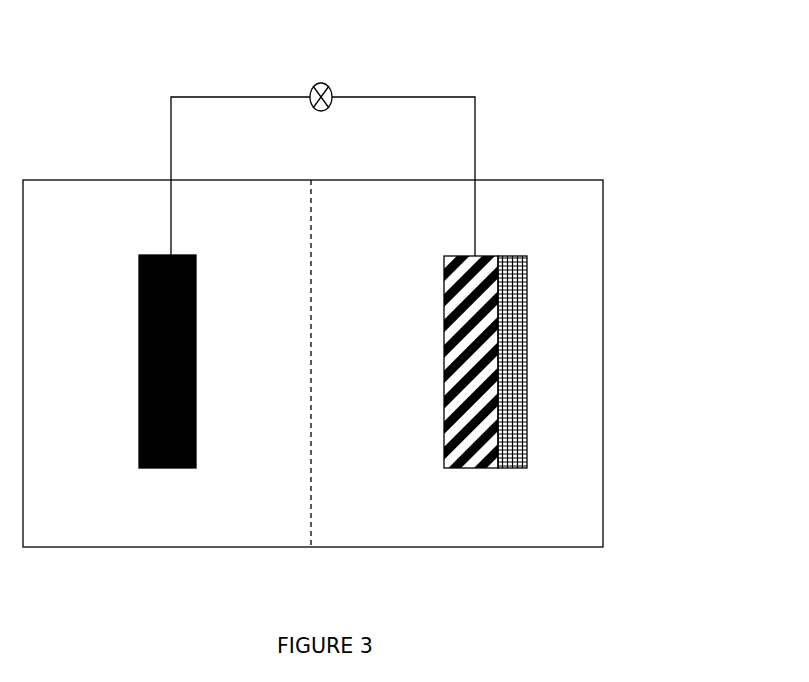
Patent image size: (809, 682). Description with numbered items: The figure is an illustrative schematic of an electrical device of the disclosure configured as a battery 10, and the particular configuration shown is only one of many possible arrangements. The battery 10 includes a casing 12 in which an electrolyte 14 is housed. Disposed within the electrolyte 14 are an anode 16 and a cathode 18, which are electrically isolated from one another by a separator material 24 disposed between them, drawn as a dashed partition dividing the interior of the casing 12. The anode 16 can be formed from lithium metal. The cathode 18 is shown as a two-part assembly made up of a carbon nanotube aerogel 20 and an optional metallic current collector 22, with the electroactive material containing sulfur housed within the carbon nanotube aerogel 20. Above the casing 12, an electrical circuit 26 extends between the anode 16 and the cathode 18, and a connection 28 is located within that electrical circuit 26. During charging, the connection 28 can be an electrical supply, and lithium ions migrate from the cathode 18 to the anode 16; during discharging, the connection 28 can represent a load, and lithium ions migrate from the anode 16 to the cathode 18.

The battery 10 is at (712, 183).
The casing 12 is at (378, 407).
The electrolyte 14 is at (65, 532).
The anode 16 is at (168, 468).
The cathode 18 is at (460, 373).
The carbon nanotube aerogel 20 is at (443, 410).
The metallic current collector 22 is at (528, 270).
The separator material 24 is at (311, 309).
The electrical circuit 26 is at (457, 97).
The connection 28 is at (323, 82).